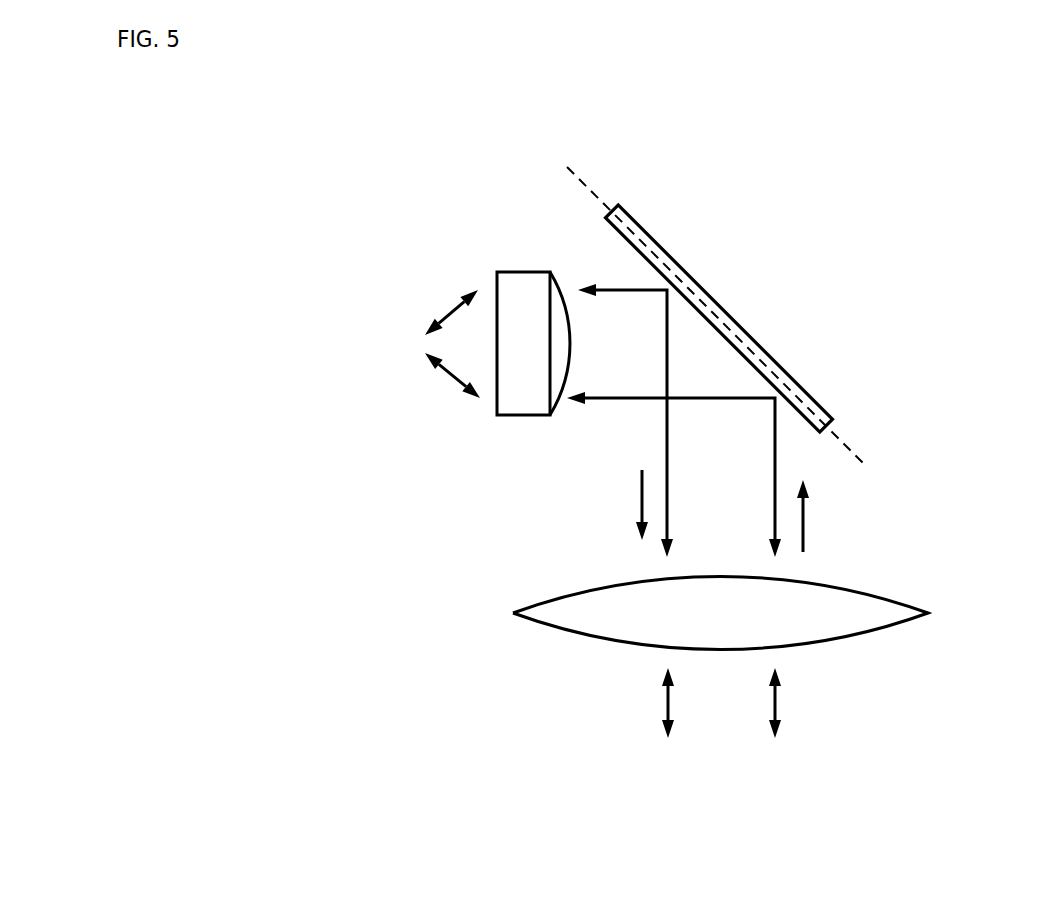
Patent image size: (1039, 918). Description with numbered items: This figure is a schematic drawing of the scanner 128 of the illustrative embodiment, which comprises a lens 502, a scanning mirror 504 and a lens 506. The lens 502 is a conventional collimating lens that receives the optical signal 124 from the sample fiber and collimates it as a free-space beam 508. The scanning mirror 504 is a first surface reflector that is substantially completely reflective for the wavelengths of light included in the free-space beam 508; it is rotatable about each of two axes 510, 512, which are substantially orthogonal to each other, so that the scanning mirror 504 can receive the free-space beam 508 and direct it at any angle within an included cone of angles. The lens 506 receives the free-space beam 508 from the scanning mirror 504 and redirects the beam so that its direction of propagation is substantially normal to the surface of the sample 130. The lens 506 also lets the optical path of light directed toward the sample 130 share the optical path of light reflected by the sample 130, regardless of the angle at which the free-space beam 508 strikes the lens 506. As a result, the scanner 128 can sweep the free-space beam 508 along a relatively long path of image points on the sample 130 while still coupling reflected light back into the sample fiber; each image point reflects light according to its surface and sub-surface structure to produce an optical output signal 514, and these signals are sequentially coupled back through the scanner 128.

The scanner 128 is at (368, 154).
The scanning mirror 504 is at (827, 408).
The axis 510 is at (587, 185).
The axis 512 is at (724, 315).
The lens 502 is at (523, 416).
The optical signal 124 is at (428, 393).
The free-space beam 508 is at (640, 517).
The optical output signal 514 is at (803, 507).
The lens 506 is at (930, 615).
The sample 130 is at (720, 735).